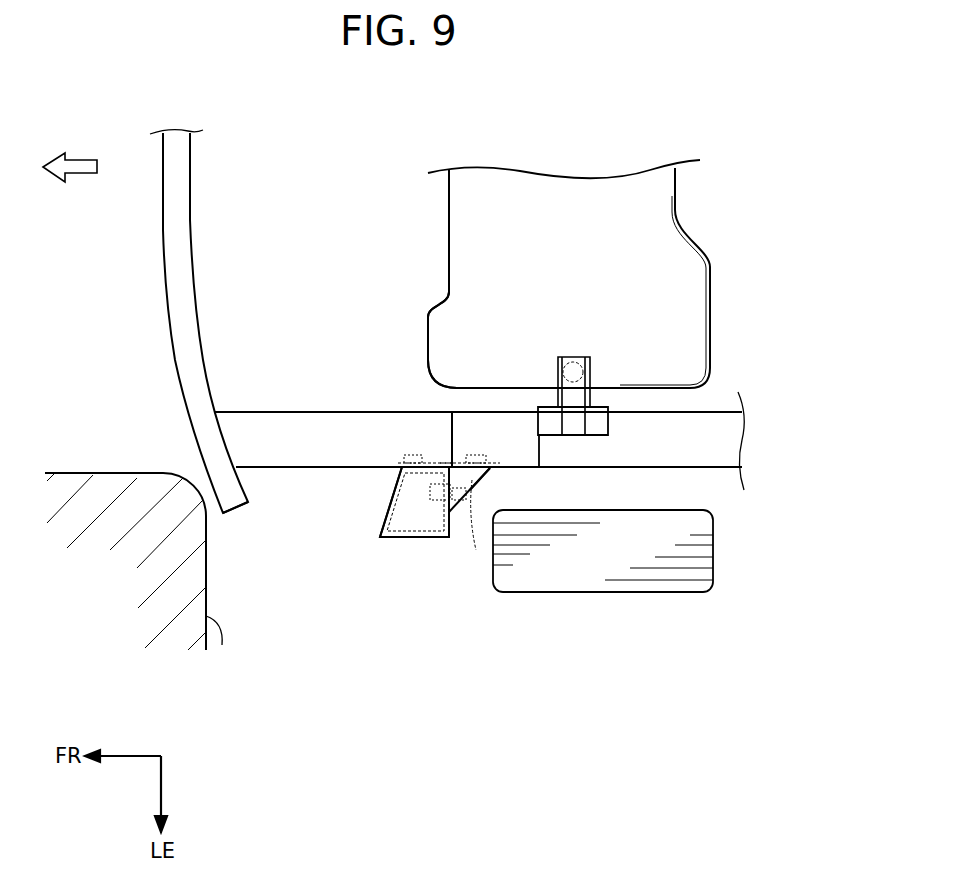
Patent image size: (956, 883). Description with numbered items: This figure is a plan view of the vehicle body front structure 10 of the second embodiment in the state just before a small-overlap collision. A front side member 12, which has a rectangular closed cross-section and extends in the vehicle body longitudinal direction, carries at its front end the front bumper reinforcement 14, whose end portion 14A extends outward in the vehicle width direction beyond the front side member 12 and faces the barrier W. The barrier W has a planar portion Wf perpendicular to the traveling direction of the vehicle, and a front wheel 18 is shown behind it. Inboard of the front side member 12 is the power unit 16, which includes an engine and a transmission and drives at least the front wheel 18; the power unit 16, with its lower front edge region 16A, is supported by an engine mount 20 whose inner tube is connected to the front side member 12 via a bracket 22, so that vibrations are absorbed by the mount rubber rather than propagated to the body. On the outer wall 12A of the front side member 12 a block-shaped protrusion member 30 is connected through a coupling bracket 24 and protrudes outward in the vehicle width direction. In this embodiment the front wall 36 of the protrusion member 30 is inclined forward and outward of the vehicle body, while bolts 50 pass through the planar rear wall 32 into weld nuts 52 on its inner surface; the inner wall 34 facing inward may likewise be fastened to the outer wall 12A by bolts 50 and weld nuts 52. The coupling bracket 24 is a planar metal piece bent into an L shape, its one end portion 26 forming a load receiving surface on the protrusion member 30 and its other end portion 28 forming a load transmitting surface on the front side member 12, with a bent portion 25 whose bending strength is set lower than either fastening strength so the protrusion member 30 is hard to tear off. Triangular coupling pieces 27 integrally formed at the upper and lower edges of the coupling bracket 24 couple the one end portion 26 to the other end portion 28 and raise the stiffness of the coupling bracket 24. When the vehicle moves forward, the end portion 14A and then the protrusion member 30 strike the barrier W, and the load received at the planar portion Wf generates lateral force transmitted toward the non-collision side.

The vehicle front structure 10 is at (365, 595).
The front side member 12 is at (257, 412).
The outer wall 12A is at (283, 467).
The front bumper reinforcement 14 is at (165, 256).
The end portion of the front bumper reinforcement 14A is at (236, 507).
The power unit 16 is at (572, 195).
The front lower edge of body panel 16A is at (427, 342).
The front wheel 18 is at (587, 585).
The engine mount 20 is at (572, 362).
The bracket 22 is at (603, 422).
The coupling bracket 24 is at (452, 460).
The bent portion 25 is at (447, 465).
The one end portion (load receiving surface) 26 is at (452, 512).
The coupling piece 27 is at (480, 487).
The other end portion (load transmitting surface) 28 is at (490, 470).
The protrusion member 30 is at (417, 537).
The rear wall 32 is at (450, 513).
The inner wall 34 is at (405, 466).
The front wall 36 is at (398, 485).
The bolt 50 is at (400, 500).
The weld nut 52 is at (410, 457).
The barrier W is at (107, 470).
The planar portion of the barrier Wf is at (222, 645).